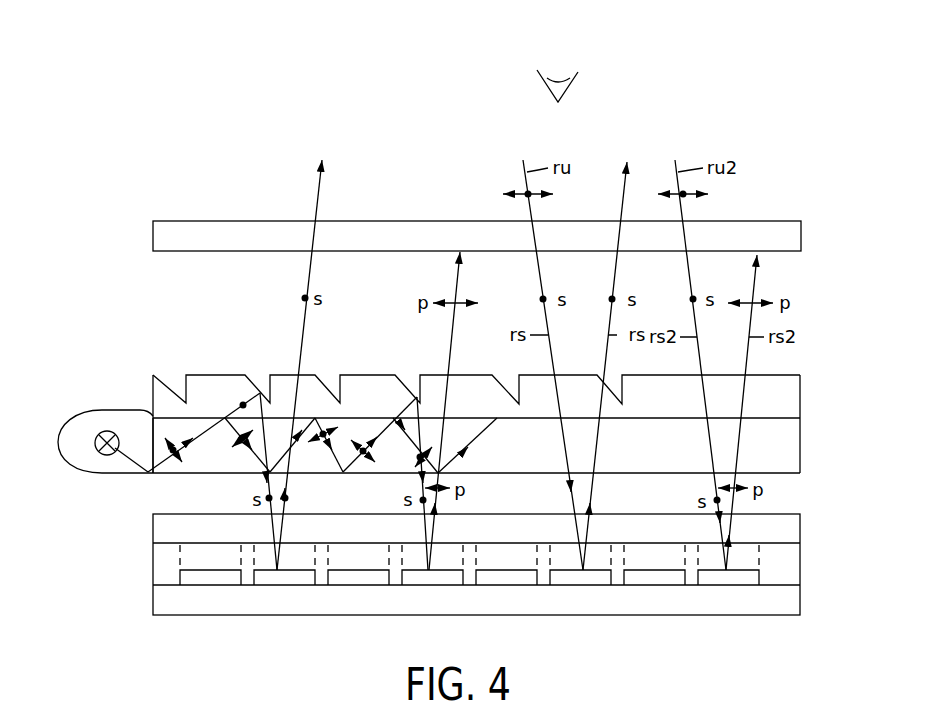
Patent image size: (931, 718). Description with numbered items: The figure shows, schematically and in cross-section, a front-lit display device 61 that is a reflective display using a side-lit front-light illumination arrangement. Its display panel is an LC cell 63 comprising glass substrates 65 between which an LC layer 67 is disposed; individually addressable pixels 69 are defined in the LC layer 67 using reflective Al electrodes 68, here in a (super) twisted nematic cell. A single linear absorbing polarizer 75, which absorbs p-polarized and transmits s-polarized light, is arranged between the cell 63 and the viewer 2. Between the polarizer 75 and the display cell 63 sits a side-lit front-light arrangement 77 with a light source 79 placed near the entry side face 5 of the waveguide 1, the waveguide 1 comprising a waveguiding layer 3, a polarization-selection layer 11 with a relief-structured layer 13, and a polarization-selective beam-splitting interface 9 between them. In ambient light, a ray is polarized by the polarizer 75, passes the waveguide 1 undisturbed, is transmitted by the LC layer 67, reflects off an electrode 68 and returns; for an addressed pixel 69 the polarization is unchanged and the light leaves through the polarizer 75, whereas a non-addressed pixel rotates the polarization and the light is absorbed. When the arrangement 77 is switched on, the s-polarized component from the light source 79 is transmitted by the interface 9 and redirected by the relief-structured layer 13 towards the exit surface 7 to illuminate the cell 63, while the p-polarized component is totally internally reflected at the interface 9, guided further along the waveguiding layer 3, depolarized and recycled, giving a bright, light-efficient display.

The front-lit display device 61 is at (123, 192).
The viewer 2 is at (578, 72).
The linear absorbing polarizer 75 is at (771, 233).
The waveguide 1 is at (212, 357).
The polarization-selection layer 11 is at (504, 372).
The relief-structured layer 13 is at (367, 375).
The polarization-selective beam-splitting interface 9 is at (775, 418).
The waveguiding layer 3 is at (785, 453).
The exit surface 7 is at (203, 474).
The entry side face 5 is at (142, 410).
The side-lit front-light arrangement 77 is at (92, 392).
The light source 79 is at (98, 457).
The LC cell 63 is at (107, 515).
The LC layer 67 is at (785, 555).
The glass substrates 65 is at (155, 596).
The pixels 69 is at (755, 565).
The reflective Al electrodes 68 is at (715, 582).